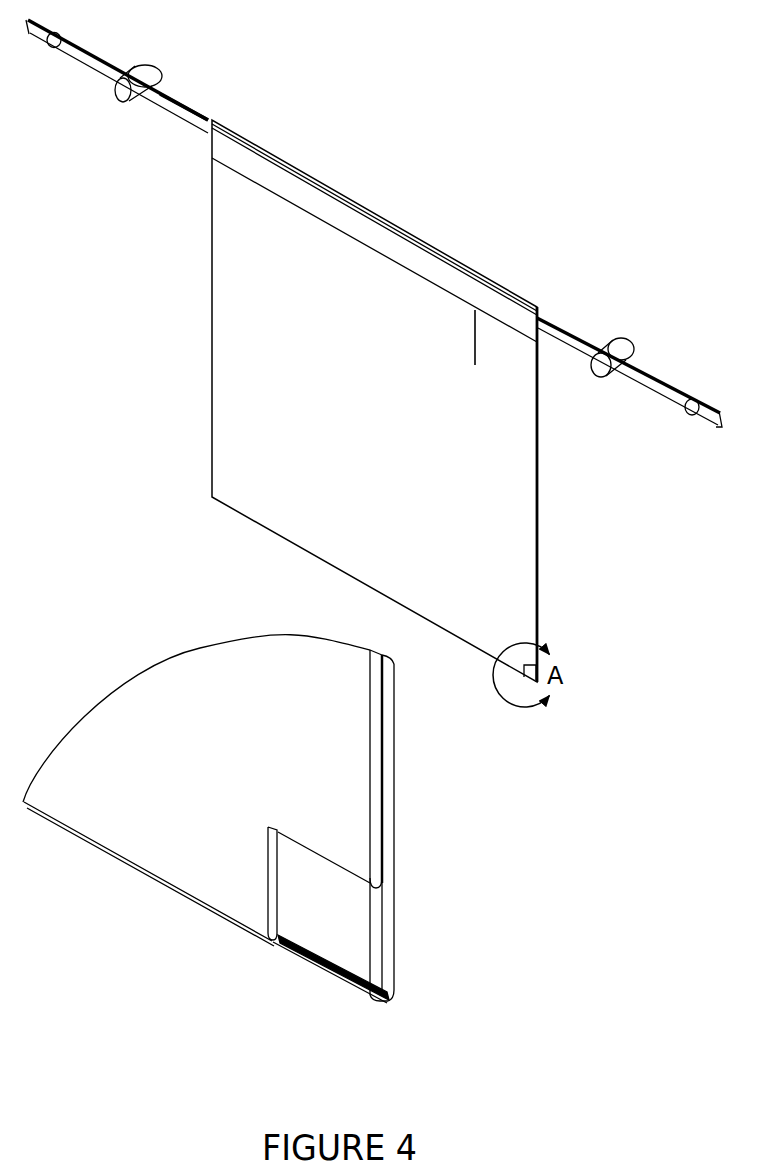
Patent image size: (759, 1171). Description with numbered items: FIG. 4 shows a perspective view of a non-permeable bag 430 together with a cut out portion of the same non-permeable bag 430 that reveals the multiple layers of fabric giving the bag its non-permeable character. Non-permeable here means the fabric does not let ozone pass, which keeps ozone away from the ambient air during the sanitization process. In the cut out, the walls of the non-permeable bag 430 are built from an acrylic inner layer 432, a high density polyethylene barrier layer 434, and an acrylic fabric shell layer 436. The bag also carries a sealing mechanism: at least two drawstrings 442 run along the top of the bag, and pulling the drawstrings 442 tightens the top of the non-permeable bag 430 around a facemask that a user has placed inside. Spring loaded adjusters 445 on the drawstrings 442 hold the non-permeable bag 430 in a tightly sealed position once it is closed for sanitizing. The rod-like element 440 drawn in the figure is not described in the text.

The non-permeable bag 430 is at (226, 528).
The curtain rod 440 is at (633, 388).
The drawstrings 442 is at (187, 128).
The spring loaded adjusters 445 is at (115, 108).
The acrylic inner layer 432 is at (313, 963).
The high density polyethylene barrier layer 434 is at (348, 977).
The acrylic fabric shell layer 436 is at (372, 993).